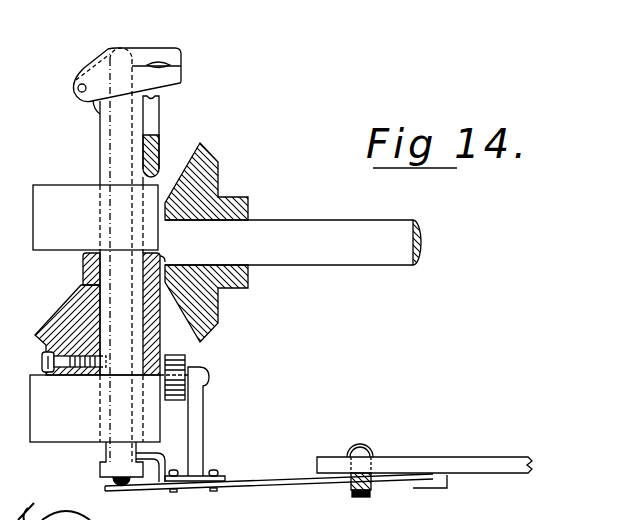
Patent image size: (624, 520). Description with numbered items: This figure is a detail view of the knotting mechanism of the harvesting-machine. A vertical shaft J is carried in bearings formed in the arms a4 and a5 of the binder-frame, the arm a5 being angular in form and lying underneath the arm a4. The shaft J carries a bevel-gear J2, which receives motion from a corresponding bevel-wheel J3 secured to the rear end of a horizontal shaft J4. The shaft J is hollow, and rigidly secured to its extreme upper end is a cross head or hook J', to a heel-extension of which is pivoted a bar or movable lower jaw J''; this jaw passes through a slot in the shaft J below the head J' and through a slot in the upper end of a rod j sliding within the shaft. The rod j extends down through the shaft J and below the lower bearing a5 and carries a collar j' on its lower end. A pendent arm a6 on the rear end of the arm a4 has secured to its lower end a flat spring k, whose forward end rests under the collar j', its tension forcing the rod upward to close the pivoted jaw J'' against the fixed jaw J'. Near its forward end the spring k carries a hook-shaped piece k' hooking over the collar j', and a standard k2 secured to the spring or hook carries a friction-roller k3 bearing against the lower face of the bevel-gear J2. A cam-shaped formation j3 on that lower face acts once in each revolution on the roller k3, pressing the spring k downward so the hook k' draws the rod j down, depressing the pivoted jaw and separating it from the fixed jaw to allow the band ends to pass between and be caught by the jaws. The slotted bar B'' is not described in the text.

The cross head or hook J' is at (129, 71).
The movable lower jaw J'' is at (128, 94).
The slotted bar B'' is at (169, 136).
The vertical shaft J is at (121, 260).
The bevel-gear J2 is at (92, 314).
The bevel-wheel J3 is at (220, 194).
The horizontal shaft J4 is at (293, 242).
The cam-shaped formation j3 is at (108, 377).
The rod j is at (114, 459).
The collar j' is at (104, 486).
The flat spring k is at (276, 489).
The hook-shaped piece k' is at (158, 467).
The standard k2 is at (198, 420).
The friction-roller k3 is at (199, 375).
The arm a4 is at (95, 217).
The arm a5 is at (95, 408).
The pendent arm a6 is at (424, 461).